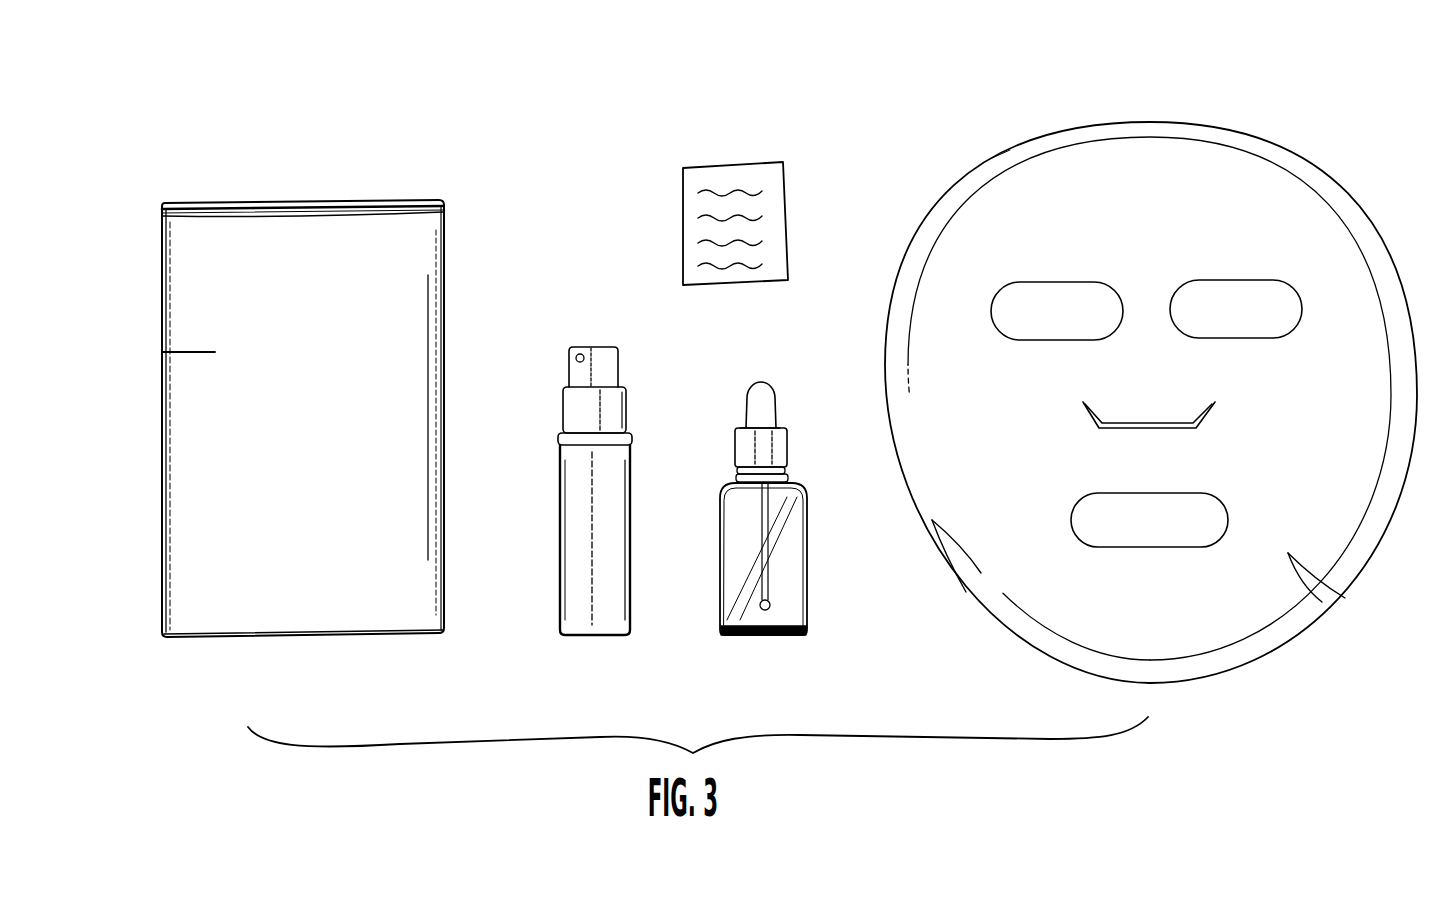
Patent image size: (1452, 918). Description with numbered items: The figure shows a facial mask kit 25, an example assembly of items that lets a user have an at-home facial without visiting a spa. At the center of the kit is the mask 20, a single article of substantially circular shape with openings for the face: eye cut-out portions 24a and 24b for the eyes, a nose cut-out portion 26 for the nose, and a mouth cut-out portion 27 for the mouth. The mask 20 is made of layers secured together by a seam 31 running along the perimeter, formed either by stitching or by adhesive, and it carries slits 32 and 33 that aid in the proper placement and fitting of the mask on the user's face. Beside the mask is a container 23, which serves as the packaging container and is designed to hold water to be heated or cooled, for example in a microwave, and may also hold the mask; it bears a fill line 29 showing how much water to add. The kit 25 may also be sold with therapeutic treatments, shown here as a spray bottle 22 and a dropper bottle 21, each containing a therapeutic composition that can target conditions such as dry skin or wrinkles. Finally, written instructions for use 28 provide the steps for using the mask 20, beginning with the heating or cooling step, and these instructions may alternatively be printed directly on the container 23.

The mask 20 is at (1097, 125).
The dropper bottle 21 is at (755, 380).
The spray bottle 22 is at (588, 346).
The container 23 is at (302, 200).
The eye cut-out portion 24a is at (1277, 280).
The eye cut-out portion 24b is at (1099, 278).
The kit 25 is at (851, 126).
The nose cut-out portion 26 is at (1197, 429).
The mouth cut-out portion 27 is at (1198, 546).
The instructions for use 28 is at (712, 160).
The fill line 29 is at (196, 353).
The seam 31 is at (1000, 168).
The slit 32 is at (1015, 553).
The slit 33 is at (1322, 585).